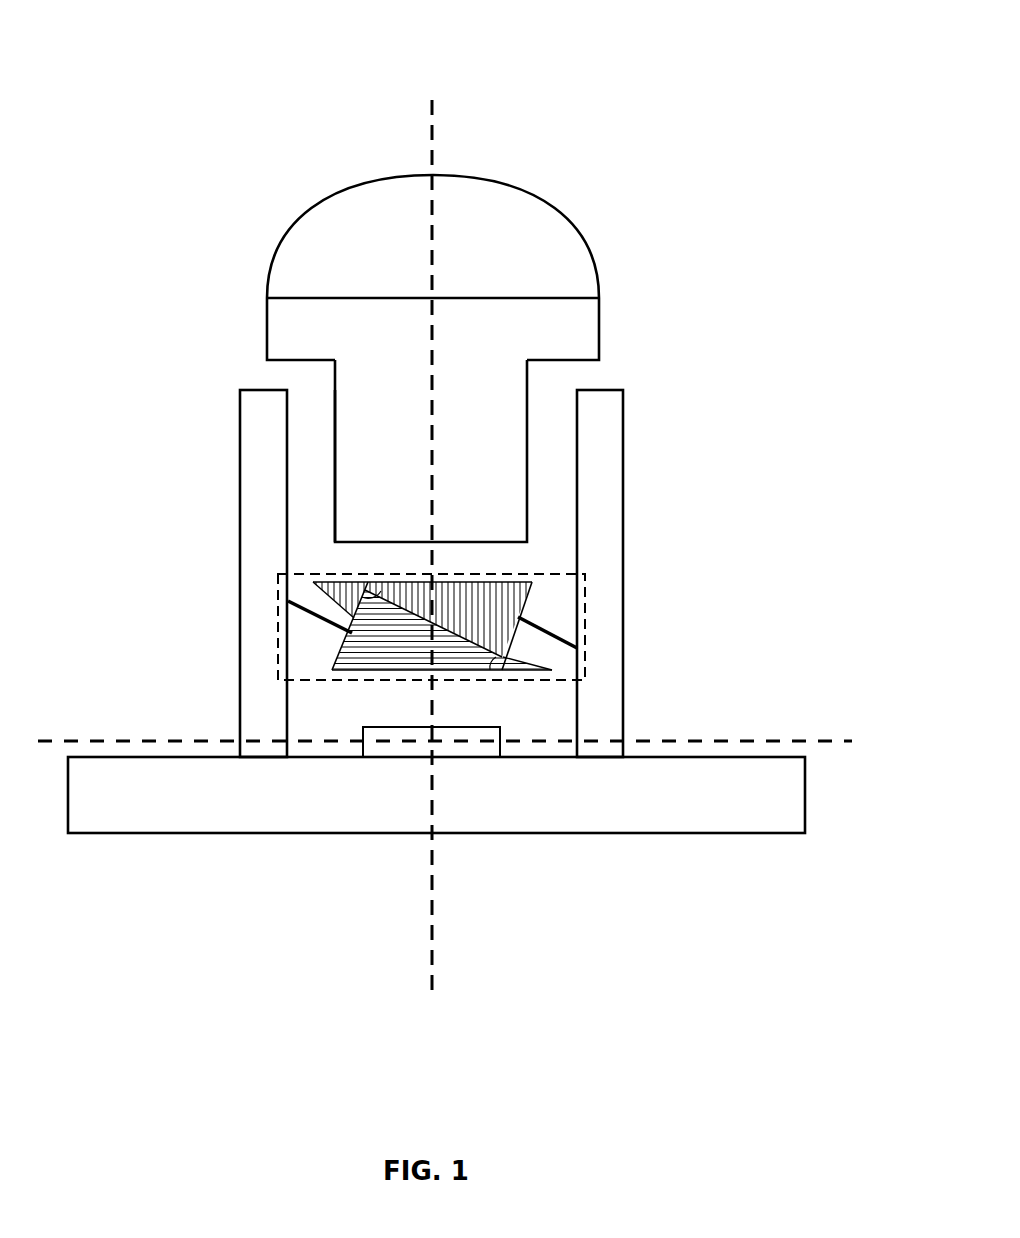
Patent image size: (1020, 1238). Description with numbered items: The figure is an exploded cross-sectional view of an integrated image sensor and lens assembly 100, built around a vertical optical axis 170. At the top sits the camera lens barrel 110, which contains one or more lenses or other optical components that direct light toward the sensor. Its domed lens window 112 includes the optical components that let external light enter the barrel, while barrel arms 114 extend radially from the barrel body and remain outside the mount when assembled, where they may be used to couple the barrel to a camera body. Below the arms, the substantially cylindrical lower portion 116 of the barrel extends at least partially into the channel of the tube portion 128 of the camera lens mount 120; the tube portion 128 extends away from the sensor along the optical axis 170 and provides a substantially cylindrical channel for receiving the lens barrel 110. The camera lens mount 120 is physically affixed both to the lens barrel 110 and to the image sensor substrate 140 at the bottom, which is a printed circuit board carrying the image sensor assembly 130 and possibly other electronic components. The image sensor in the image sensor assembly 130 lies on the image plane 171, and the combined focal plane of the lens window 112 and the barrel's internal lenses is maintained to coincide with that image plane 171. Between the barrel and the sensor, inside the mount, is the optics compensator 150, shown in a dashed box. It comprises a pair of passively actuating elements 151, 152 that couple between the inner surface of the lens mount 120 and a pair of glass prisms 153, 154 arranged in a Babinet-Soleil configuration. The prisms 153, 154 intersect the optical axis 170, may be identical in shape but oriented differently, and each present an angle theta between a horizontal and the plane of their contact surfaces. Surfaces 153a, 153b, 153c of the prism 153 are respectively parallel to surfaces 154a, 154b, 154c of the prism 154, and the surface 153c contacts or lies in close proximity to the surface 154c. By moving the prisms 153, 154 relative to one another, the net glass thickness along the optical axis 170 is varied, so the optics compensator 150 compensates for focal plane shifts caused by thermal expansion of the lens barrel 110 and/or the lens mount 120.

The integrated image sensor and lens assembly 100 is at (108, 124).
The camera lens barrel 110 is at (402, 342).
The lens window 112 is at (527, 189).
The barrel arms 114 is at (271, 329).
The lower portion 116 is at (361, 389).
The camera lens mount 120 is at (238, 415).
The tube portion 128 is at (314, 465).
The image sensor assembly 130 is at (501, 746).
The image sensor substrate 140 is at (266, 838).
The optics compensator 150 is at (324, 573).
The passively actuating element 151 is at (296, 625).
The passively actuating element 152 is at (555, 626).
The prism 153 is at (433, 637).
The surface of prism 153 153a is at (360, 673).
The surface of prism 153 153b is at (346, 616).
The surface of prism 153 153c is at (549, 668).
The prism 154 is at (410, 604).
The surface of prism 154 154a is at (514, 582).
The surface of prism 154 154b is at (517, 643).
The surface of prism 154 154c is at (316, 585).
The optical axis 170 is at (513, 1024).
The image plane 171 is at (698, 748).